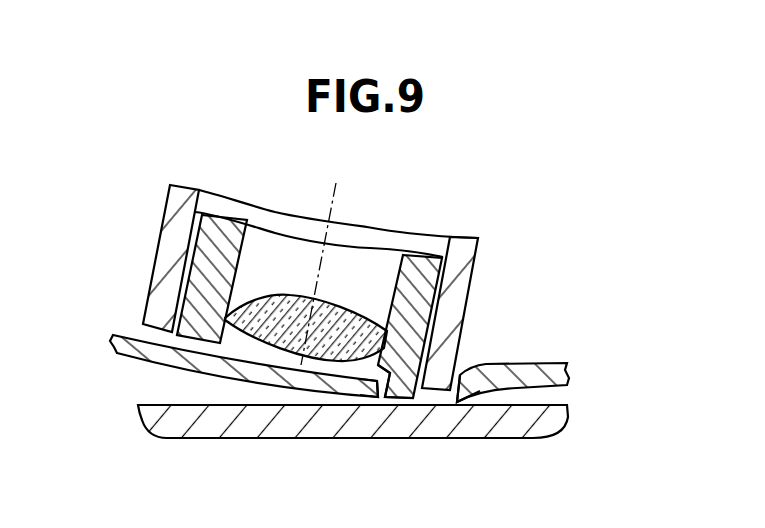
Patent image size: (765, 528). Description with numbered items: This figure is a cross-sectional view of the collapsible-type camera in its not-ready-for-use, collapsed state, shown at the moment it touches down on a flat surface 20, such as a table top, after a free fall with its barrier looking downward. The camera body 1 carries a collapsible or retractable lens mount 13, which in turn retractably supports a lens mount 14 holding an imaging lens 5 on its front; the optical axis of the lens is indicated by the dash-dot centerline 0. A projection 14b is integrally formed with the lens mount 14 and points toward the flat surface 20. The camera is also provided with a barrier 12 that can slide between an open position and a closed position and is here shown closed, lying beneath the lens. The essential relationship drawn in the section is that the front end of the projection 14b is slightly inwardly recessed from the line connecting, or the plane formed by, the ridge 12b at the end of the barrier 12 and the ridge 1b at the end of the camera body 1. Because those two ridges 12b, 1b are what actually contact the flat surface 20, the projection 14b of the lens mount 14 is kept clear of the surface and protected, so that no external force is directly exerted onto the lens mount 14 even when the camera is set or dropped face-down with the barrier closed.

The collapsible lens mount 13 is at (458, 302).
The lens mount 14 is at (418, 283).
The projection 14b is at (398, 380).
The lens 5 is at (273, 296).
The optical axis 0 is at (329, 201).
The barrier 12 is at (134, 356).
The ridge 12b is at (372, 398).
The camera body 1 is at (540, 380).
The ridge 1b is at (459, 404).
The flat surface 20 is at (556, 396).